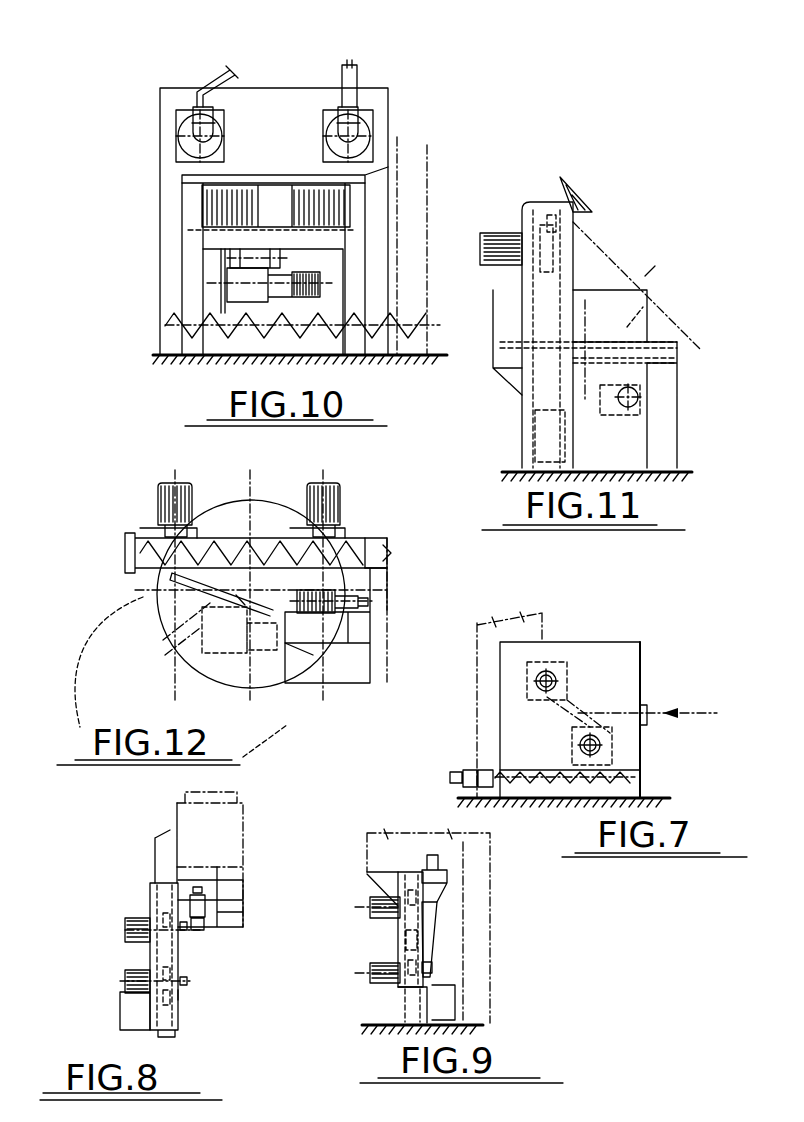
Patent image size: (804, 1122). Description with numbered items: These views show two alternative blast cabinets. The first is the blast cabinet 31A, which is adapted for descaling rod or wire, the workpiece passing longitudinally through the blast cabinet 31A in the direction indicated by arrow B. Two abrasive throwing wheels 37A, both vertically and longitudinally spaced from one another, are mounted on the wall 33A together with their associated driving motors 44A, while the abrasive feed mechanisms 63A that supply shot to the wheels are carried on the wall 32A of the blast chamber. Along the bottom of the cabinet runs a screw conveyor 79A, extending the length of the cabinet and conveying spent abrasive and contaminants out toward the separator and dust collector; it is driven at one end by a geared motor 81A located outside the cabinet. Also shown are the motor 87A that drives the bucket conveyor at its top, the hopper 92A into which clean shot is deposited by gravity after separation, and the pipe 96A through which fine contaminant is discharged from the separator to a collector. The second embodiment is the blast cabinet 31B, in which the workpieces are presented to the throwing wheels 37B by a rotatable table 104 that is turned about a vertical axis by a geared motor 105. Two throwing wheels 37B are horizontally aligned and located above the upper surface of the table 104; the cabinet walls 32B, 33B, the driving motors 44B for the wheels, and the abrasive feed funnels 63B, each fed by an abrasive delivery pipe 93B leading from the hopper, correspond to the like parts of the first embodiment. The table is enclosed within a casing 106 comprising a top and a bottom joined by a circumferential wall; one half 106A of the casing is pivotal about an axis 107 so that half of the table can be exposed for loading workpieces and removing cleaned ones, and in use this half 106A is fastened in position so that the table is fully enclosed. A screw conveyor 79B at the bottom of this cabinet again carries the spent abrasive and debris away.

In FIG. 7, the blast cabinet 31A is at (578, 638).
In FIG. 8, the blast cabinet 31A is at (182, 1013).
In FIG. 9, the blast cabinet 31A is at (426, 931).
In FIG. 10, the blast cabinet 31B is at (317, 82).
In FIG. 12, the blast cabinet 31B is at (270, 537).
In FIG. 8, the wall 32A is at (182, 998).
In FIG. 11, the wall 32B is at (573, 253).
In FIG. 7, the wall 33A is at (528, 730).
In FIG. 8, the wall 33A is at (150, 902).
In FIG. 9, the wall 33A is at (398, 987).
In FIG. 11, the wall 33B is at (522, 283).
In FIG. 7, the abrasive throwing wheel 37A is at (567, 670).
In FIG. 8, the abrasive throwing wheel 37A is at (165, 970).
In FIG. 10, the throwing wheel 37B is at (223, 117).
In FIG. 11, the throwing wheel 37B is at (547, 225).
In FIG. 12, the throwing wheel 37B is at (137, 530).
In FIG. 7, the driving motor 44A is at (558, 683).
In FIG. 8, the driving motor 44A is at (137, 980).
In FIG. 9, the driving motor 44A is at (387, 967).
In FIG. 11, the driving motor 44B is at (503, 247).
In FIG. 12, the driving motor 44B is at (168, 502).
In FIG. 8, the abrasive feed mechanism 63A is at (188, 933).
In FIG. 9, the abrasive feed mechanism 63A is at (425, 966).
In FIG. 10, the abrasive feed funnel 63B is at (190, 115).
In FIG. 11, the abrasive feed funnel 63B is at (573, 250).
In FIG. 7, the screw conveyor 79A is at (540, 787).
In FIG. 10, the screw conveyor 79B is at (263, 333).
In FIG. 12, the screw conveyor 79B is at (228, 540).
In FIG. 7, the geared motor 81A is at (465, 775).
In FIG. 8, the motor 87A is at (205, 902).
In FIG. 9, the hopper 92A is at (440, 888).
In FIG. 9, the pipe 96A is at (435, 917).
In FIG. 10, the abrasive delivery pipe 93B is at (232, 72).
In FIG. 12, the abrasive delivery pipe 93B is at (240, 603).
In FIG. 10, the rotatable table 104 is at (353, 230).
In FIG. 11, the rotatable table 104 is at (660, 283).
In FIG. 12, the rotatable table 104 is at (313, 655).
In FIG. 10, the geared motor 105 is at (282, 297).
In FIG. 11, the geared motor 105 is at (640, 415).
In FIG. 12, the geared motor 105 is at (260, 648).
In FIG. 10, the casing 106 is at (360, 175).
In FIG. 11, the casing 106 is at (673, 337).
In FIG. 12, the casing 106 is at (205, 612).
In FIG. 12, the half of the casing 106A is at (80, 645).
In FIG. 12, the axis 107 is at (153, 597).
In FIG. 7, the arrow B is at (690, 712).